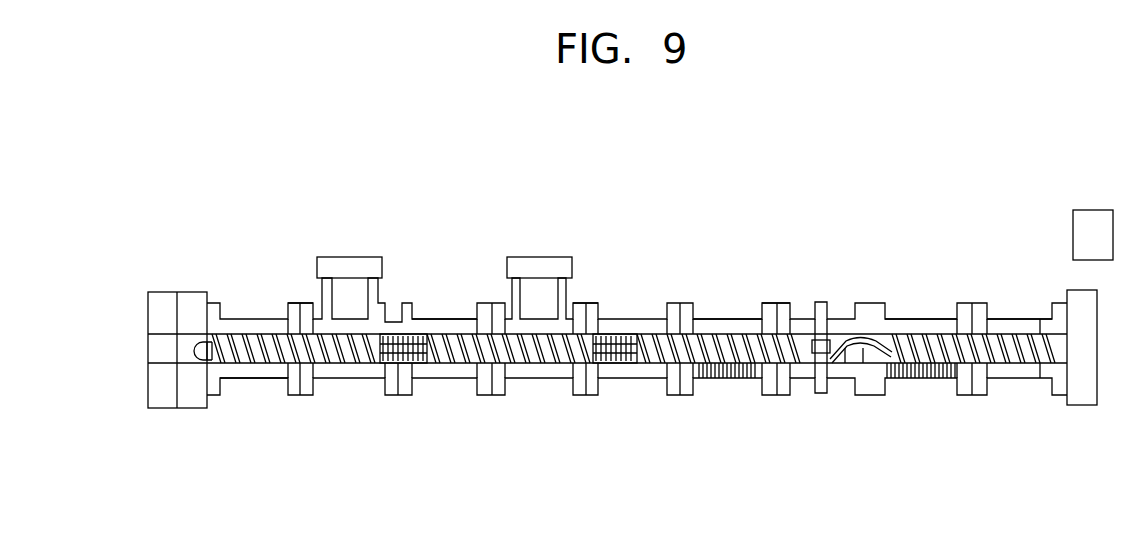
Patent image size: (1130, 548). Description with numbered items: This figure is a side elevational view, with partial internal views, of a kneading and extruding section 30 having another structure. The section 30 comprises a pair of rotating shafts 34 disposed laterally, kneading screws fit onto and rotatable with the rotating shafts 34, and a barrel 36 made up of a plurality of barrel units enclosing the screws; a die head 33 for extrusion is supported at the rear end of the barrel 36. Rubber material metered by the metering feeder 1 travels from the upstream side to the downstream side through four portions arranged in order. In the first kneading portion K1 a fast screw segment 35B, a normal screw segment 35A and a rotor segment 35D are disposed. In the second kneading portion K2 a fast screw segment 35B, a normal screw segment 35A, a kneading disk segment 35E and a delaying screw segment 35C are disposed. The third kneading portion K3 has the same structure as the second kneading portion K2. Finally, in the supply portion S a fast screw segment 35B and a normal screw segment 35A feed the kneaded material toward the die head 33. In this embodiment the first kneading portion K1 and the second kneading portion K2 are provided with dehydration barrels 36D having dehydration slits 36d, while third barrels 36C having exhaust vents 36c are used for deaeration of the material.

The metering feeder 1 is at (1022, 319).
The kneading and extruding section 30 is at (225, 278).
The die head 33 is at (158, 292).
The rotating shaft 34 is at (200, 352).
The normal screw segment 35A is at (665, 303).
The fast screw segment 35B is at (576, 334).
The delaying screw segment 35C is at (390, 334).
The rotor segment 35D is at (866, 349).
The kneading disk segment 35E is at (416, 364).
The barrel 36 is at (255, 378).
The third barrel unit 36C is at (305, 303).
The exhaust vent 36c is at (336, 280).
The dehydration barrel 36D is at (775, 303).
The dehydration slit 36d is at (722, 378).
The first kneading portion K1 is at (988, 322).
The second kneading portion K2 is at (718, 321).
The third kneading portion K3 is at (491, 323).
The supply portion S is at (287, 327).